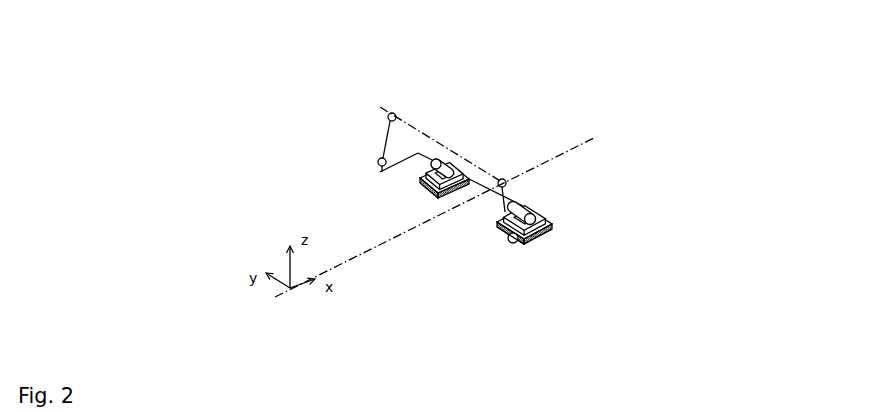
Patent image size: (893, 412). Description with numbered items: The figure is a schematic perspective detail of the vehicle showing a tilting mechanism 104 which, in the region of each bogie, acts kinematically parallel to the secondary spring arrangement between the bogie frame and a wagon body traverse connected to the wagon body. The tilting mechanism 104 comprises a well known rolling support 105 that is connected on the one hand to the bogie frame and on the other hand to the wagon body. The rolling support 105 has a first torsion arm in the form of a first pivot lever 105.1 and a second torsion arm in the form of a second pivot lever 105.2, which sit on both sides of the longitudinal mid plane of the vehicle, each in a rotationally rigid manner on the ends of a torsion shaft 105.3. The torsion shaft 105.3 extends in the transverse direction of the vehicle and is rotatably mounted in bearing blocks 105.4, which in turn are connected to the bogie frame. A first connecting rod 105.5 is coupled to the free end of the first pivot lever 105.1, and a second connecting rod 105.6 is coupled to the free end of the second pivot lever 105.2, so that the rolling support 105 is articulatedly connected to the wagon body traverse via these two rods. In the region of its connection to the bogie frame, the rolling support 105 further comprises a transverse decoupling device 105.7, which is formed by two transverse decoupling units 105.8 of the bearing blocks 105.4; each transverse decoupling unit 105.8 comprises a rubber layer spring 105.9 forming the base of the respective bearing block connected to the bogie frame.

The tilting mechanism 104 is at (574, 92).
The rolling support 105 is at (483, 119).
The first pivot lever 105.1 is at (530, 250).
The second pivot lever 105.2 is at (381, 149).
The torsion shaft 105.3 is at (513, 190).
The bearing blocks 105.4 is at (445, 156).
The first connecting rod 105.5 is at (497, 208).
The second connecting rod 105.6 is at (400, 159).
The transverse decoupling device 105.7 is at (566, 231).
The transverse decoupling units 105.8 is at (412, 188).
The rubber layer spring 105.9 is at (431, 194).